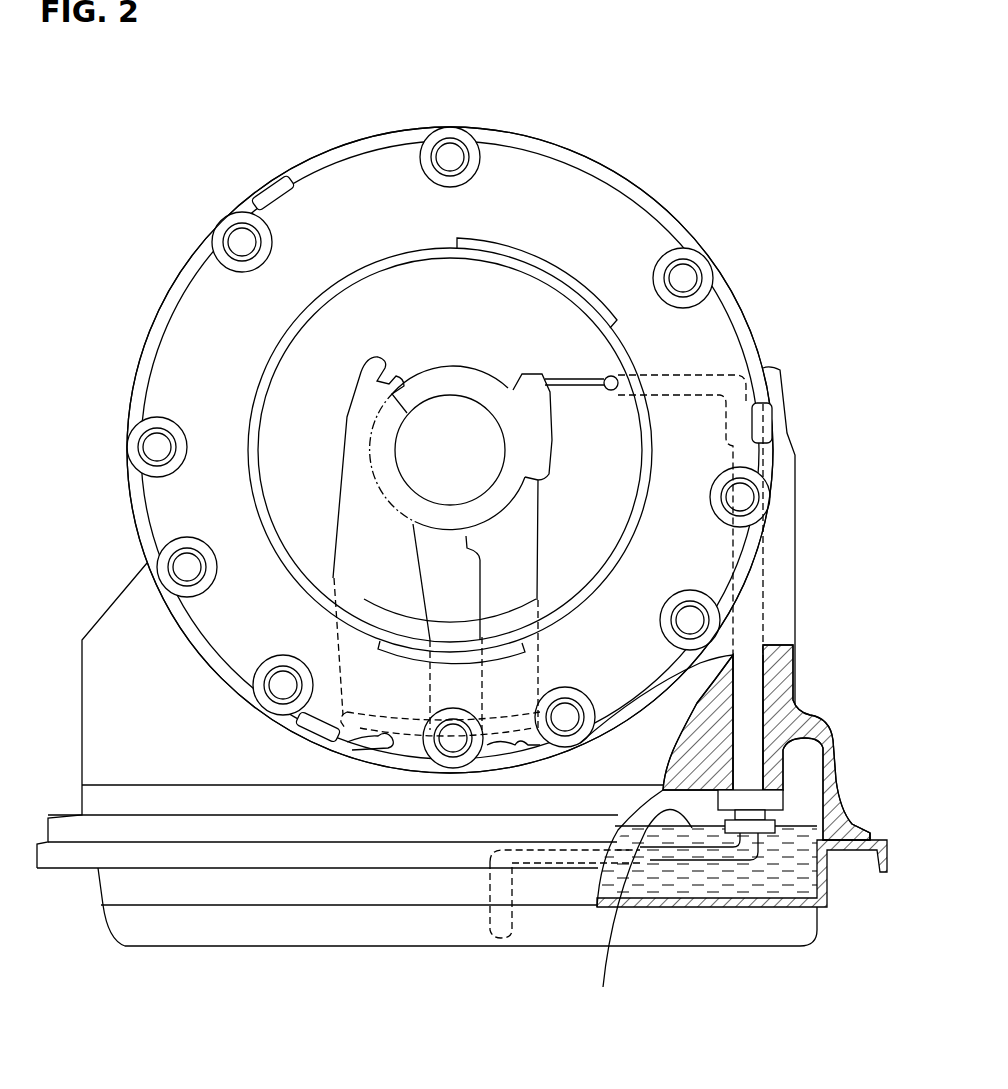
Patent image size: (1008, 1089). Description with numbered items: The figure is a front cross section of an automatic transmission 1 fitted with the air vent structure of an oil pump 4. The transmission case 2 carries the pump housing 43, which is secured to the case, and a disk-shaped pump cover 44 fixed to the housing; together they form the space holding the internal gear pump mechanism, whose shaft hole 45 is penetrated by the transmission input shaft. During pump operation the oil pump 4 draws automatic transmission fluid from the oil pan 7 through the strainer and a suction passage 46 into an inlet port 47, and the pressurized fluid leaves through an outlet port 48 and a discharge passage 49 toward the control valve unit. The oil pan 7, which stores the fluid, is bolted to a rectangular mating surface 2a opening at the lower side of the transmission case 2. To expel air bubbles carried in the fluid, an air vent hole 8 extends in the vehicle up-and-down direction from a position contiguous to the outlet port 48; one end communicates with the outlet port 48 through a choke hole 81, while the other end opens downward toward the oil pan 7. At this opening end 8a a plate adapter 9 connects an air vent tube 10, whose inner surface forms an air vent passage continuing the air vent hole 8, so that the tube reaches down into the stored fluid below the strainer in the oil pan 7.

The automatic transmission 1 is at (455, 26).
The transmission case 2 is at (416, 467).
The mating surface 2a is at (870, 833).
The oil pump 4 is at (348, 290).
The oil pan 7 is at (274, 946).
The air vent hole 8 is at (778, 729).
The opening end 8a is at (800, 709).
The plate adapter 9 is at (749, 800).
The air vent tube 10 is at (697, 858).
The pump housing 43 is at (385, 175).
The pump cover 44 is at (476, 285).
The shaft hole 45 is at (428, 415).
The suction passage 46 is at (380, 737).
The inlet port 47 is at (352, 414).
The outlet port 48 is at (543, 468).
The discharge passage 49 is at (520, 742).
The choke hole 81 is at (574, 383).